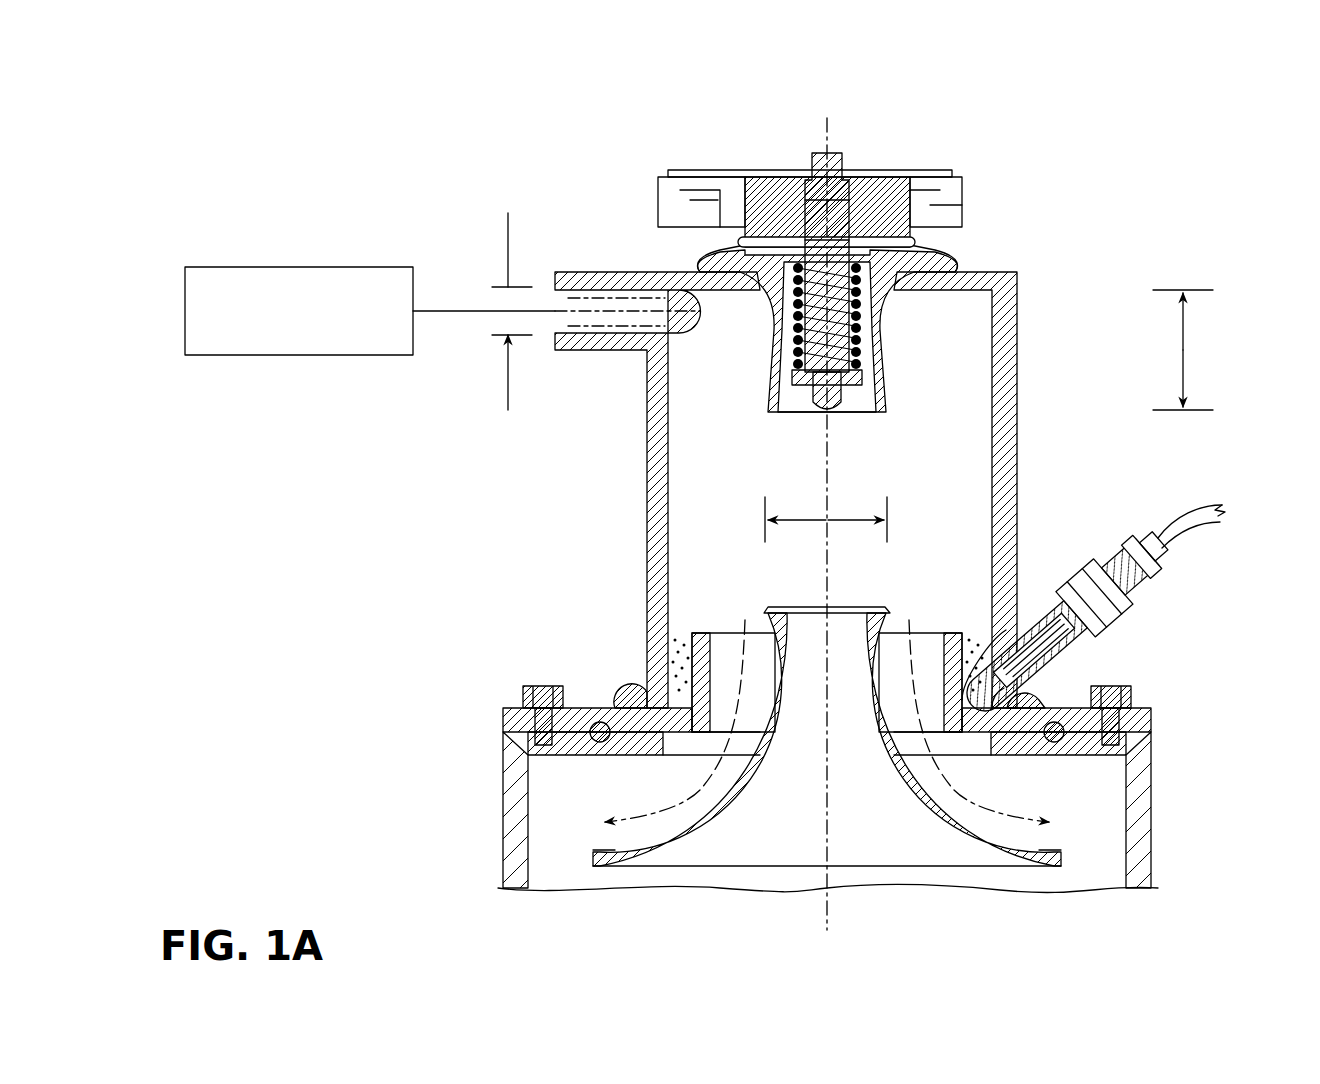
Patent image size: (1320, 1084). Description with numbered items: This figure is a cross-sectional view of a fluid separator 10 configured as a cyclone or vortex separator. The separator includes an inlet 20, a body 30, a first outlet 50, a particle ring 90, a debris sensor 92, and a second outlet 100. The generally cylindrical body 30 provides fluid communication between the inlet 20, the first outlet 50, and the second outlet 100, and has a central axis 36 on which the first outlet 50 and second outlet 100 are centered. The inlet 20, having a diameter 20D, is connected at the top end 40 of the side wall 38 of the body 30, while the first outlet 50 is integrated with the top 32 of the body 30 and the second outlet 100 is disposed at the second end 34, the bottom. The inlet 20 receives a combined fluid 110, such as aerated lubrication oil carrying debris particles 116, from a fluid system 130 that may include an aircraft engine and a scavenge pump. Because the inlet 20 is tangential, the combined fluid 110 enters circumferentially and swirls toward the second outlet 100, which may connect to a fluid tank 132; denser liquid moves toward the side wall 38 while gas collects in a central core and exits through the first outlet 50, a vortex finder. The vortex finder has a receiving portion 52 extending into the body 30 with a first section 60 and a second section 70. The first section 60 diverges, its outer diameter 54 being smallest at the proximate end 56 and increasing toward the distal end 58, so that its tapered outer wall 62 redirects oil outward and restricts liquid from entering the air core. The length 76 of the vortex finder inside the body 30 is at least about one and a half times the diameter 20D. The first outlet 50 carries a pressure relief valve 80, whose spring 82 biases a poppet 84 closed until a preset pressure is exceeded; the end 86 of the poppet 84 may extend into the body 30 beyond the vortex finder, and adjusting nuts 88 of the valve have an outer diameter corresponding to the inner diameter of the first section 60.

The fluid separator 10 is at (1152, 186).
The inlet 20 is at (568, 368).
The diameter of inlet 20D is at (512, 230).
The body 30 is at (832, 468).
The top 32 is at (992, 272).
The second end 34 is at (630, 660).
The central axis 36 is at (827, 118).
The side wall 38 is at (1017, 465).
The top end of side wall 40 is at (637, 362).
The first outlet 50 is at (898, 377).
The receiving portion 52 is at (819, 374).
The outer diameter 54 is at (796, 526).
The proximate end 56 is at (762, 298).
The distal end 58 is at (762, 424).
The first section 60 is at (858, 425).
The tapered outer wall 62 is at (878, 346).
The second section 70 is at (844, 219).
The length 76 is at (1186, 332).
The pressure relief valve 80 is at (787, 162).
The spring 82 is at (872, 300).
The poppet 84 is at (840, 185).
The end of poppet 86 is at (836, 410).
The adjusting nut 88 is at (820, 400).
The particle ring 90 is at (950, 647).
The debris sensor 92 is at (1096, 577).
The second outlet 100 is at (898, 622).
The combined fluid 110 is at (455, 311).
The debris particles 116 is at (680, 640).
The fluid system 130 is at (210, 267).
The fluid tank 132 is at (1165, 795).